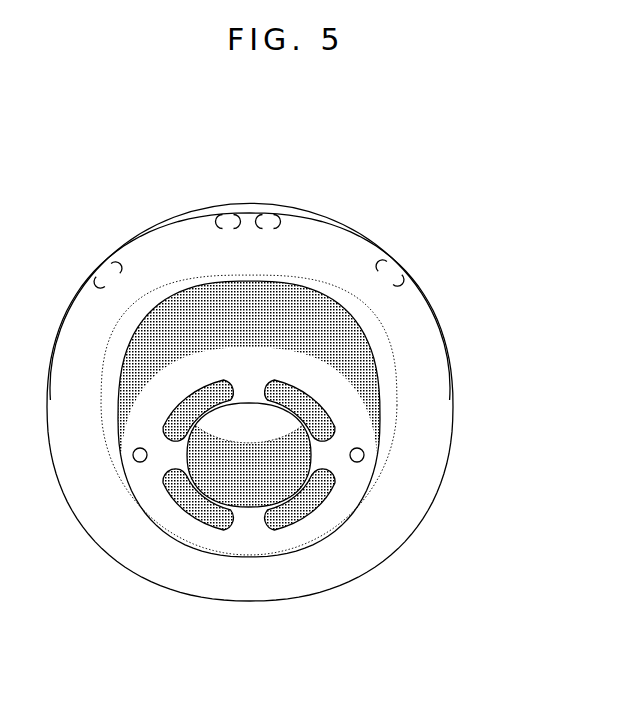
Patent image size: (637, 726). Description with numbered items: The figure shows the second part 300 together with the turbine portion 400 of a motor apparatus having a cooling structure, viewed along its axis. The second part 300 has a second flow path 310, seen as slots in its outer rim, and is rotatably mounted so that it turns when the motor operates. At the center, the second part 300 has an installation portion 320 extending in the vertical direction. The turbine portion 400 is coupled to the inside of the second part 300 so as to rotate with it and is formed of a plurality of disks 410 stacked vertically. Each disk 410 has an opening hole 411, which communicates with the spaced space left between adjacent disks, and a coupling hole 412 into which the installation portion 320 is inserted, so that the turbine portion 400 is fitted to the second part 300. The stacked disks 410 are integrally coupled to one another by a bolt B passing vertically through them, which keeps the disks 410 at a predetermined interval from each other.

The second part 300 is at (437, 293).
The second flow path 310 is at (272, 228).
The installation portion 320 is at (243, 423).
The turbine portion 400 is at (307, 513).
The disk 410 is at (355, 482).
The opening hole 411 is at (192, 500).
The coupling hole 412 is at (247, 437).
The bolt B is at (365, 461).